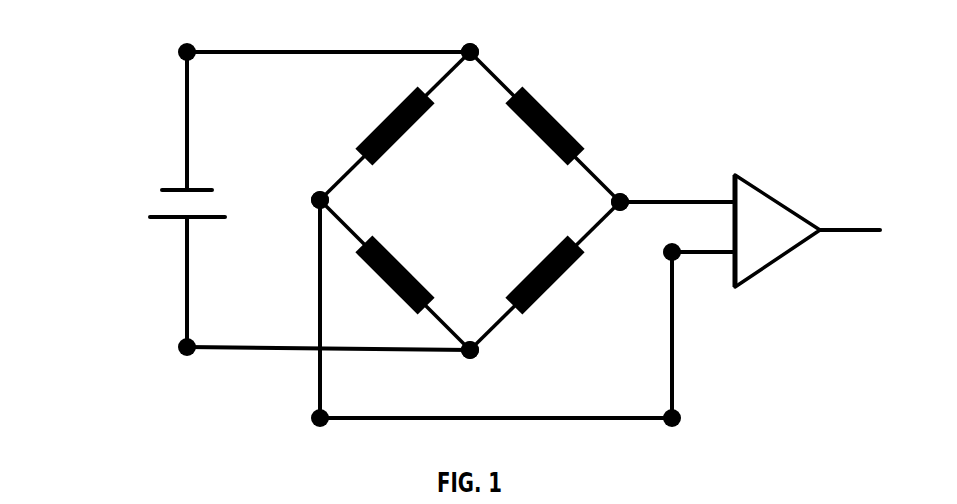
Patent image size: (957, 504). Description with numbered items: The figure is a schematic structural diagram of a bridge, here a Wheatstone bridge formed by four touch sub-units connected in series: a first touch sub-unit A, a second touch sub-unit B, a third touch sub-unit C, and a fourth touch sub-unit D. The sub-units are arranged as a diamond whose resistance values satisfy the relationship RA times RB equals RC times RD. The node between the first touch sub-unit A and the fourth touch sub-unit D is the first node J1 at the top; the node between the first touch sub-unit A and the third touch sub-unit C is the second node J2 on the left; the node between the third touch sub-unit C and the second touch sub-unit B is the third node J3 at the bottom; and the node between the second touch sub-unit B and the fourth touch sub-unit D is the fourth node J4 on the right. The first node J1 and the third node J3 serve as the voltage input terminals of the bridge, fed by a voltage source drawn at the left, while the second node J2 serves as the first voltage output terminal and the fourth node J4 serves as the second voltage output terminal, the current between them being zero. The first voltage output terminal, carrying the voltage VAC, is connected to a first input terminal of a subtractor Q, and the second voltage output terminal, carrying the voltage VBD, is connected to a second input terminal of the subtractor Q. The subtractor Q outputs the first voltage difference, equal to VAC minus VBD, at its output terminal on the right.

The first touch sub-unit A is at (392, 123).
The second touch sub-unit B is at (544, 279).
The third touch sub-unit C is at (394, 279).
The fourth touch sub-unit D is at (544, 122).
The first node J1 is at (469, 30).
The second node J2 is at (296, 202).
The third node J3 is at (471, 371).
The fourth node J4 is at (623, 184).
The subtractor Q is at (777, 235).
The voltage VBD is at (677, 187).
The voltage VAC is at (496, 395).